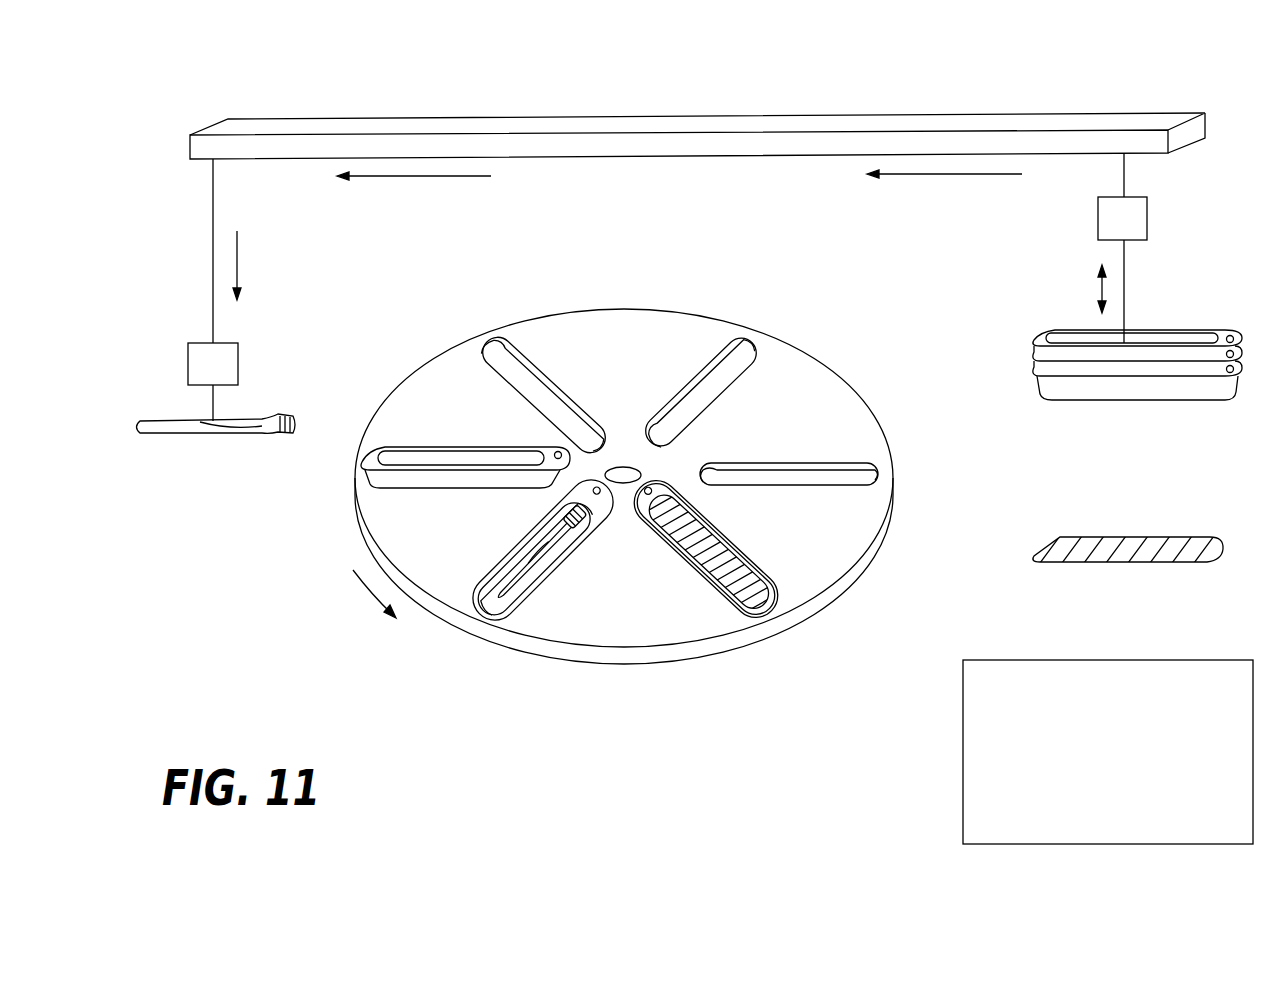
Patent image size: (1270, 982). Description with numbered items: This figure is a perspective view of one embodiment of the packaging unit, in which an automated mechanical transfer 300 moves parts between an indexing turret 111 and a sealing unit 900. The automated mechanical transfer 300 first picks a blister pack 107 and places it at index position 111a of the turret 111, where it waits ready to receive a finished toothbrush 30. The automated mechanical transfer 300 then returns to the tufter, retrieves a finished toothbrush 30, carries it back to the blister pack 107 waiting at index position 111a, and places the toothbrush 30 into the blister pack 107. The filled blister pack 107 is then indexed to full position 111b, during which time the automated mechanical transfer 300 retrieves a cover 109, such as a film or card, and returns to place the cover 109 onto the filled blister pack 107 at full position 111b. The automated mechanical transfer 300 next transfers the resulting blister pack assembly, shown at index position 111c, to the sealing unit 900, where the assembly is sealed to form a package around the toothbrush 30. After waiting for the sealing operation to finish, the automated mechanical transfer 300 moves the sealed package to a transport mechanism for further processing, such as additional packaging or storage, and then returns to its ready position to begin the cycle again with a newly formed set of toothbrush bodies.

The automated mechanical transfer 300 is at (797, 103).
The finished toothbrush 30 is at (290, 418).
The blister pack 107 is at (362, 472).
The cover 109 is at (718, 601).
The turret 111 is at (636, 640).
The index position 111a is at (392, 489).
The full position 111b is at (533, 602).
The index position 111c is at (757, 602).
The sealing unit 900 is at (1131, 768).